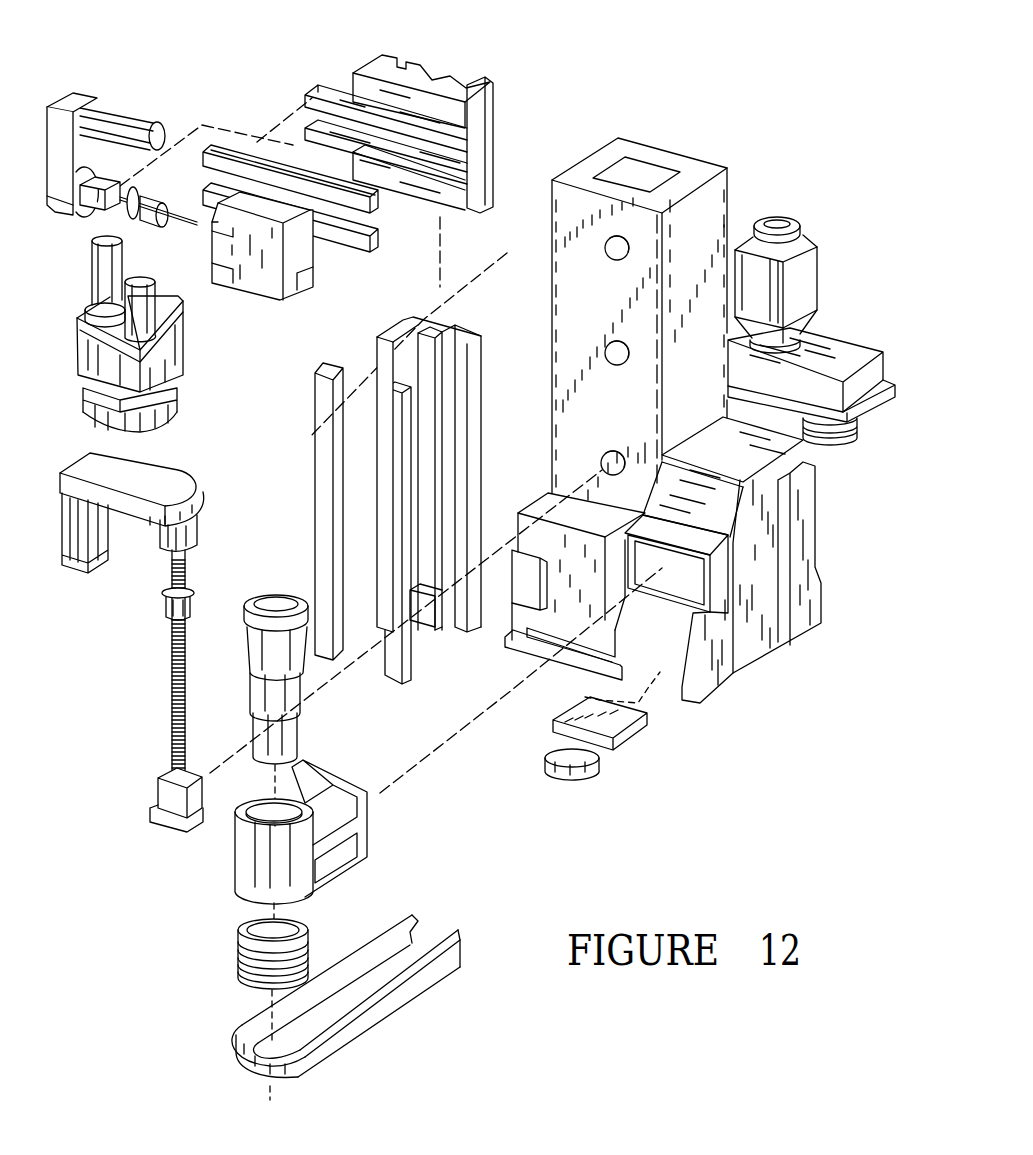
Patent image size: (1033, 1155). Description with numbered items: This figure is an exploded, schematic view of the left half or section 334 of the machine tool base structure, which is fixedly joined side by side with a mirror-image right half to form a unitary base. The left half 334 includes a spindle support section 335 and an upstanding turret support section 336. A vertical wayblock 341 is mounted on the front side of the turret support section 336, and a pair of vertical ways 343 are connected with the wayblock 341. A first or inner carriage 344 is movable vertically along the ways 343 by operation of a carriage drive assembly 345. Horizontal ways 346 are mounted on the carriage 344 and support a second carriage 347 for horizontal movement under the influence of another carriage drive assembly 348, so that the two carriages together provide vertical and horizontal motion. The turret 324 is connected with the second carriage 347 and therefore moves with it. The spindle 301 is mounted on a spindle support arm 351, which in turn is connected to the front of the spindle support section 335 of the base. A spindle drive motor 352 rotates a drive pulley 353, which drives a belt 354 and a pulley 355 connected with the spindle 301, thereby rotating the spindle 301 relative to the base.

The spindle 301 is at (278, 598).
The turret 324 is at (80, 347).
The left half or section of the base structure 334 is at (747, 678).
The spindle support section 335 is at (775, 617).
The turret support section 336 is at (717, 195).
The vertical wayblock 341 is at (407, 327).
The vertical ways 343 is at (392, 437).
The first or inner carriage 344 is at (352, 78).
The carriage drive assembly 345 is at (157, 487).
The horizontal ways 346 is at (378, 208).
The second carriage 347 is at (254, 280).
The carriage drive assembly 348 is at (66, 92).
The spindle support arm 351 is at (260, 870).
The spindle drive motor 352 is at (808, 285).
The drive pulley 353 is at (836, 440).
The belt 354 is at (400, 940).
The pulley 355 is at (237, 963).